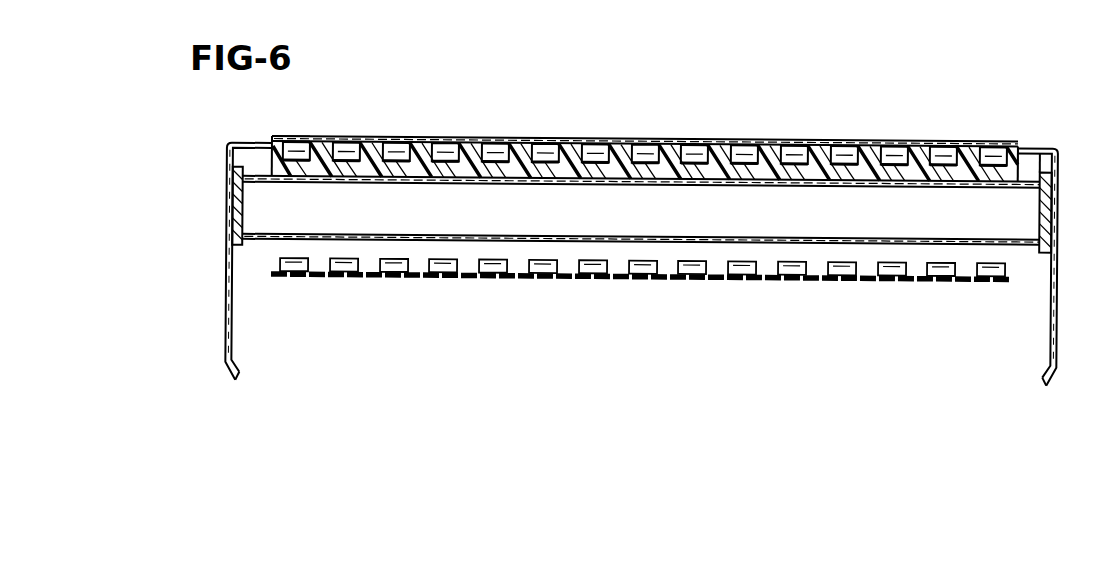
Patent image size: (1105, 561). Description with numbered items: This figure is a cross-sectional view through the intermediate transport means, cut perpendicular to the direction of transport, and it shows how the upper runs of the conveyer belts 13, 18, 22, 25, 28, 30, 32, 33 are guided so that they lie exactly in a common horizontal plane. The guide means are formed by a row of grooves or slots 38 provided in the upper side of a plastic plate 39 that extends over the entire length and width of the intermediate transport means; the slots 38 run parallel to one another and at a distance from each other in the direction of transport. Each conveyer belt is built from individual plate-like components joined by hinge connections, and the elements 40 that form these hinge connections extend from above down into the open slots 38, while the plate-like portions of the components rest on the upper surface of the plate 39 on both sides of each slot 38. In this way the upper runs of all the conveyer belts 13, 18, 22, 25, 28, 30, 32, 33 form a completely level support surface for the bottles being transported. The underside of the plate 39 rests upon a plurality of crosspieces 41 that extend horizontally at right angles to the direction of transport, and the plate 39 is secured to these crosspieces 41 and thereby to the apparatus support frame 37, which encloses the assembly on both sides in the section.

The conveyer belt 13 is at (633, 132).
The conveyer belt 18 is at (585, 132).
The conveyer belt 22 is at (535, 132).
The conveyer belt 25 is at (487, 132).
The conveyer belt 28 is at (438, 132).
The conveyer belt 30 is at (393, 132).
The conveyer belt 32 is at (346, 132).
The conveyer belt 33 is at (301, 132).
The apparatus support frame 37 is at (229, 143).
The slot 38 is at (940, 180).
The plastic plate 39 is at (1021, 146).
The hinge connection element 40 is at (284, 142).
The crosspiece 41 is at (243, 200).